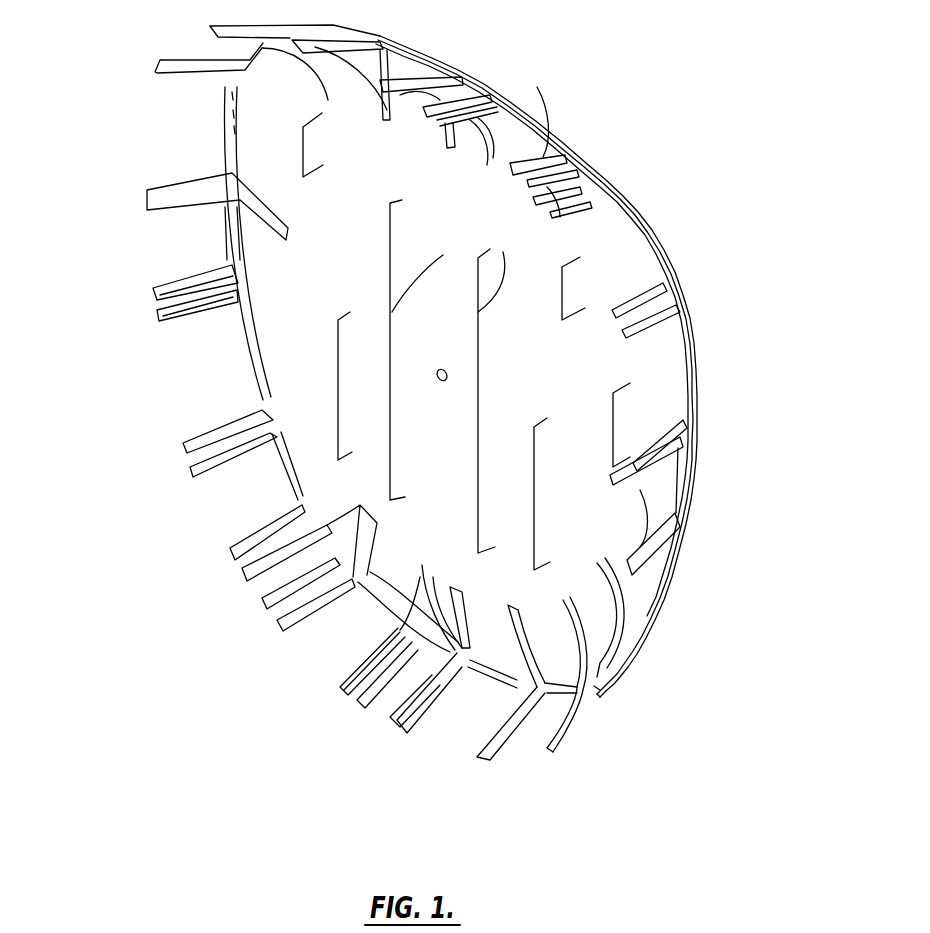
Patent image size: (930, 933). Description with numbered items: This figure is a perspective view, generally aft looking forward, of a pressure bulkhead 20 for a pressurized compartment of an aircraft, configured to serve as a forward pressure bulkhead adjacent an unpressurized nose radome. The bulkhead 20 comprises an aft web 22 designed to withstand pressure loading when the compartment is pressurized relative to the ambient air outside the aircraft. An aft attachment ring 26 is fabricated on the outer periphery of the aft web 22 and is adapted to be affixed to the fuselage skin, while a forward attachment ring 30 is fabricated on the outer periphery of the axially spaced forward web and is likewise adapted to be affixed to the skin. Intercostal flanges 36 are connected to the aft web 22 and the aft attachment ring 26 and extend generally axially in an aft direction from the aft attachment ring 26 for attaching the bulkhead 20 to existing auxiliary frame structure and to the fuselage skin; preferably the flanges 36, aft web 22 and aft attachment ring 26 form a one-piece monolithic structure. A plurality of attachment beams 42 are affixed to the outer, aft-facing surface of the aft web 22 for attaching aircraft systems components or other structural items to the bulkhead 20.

The pressure bulkhead 20 is at (690, 224).
The aft web 22 is at (352, 237).
The aft attachment ring 26 is at (245, 335).
The forward attachment ring 30 is at (683, 322).
The intercostal flanges 36 is at (170, 73).
The attachment beams 42 is at (562, 290).